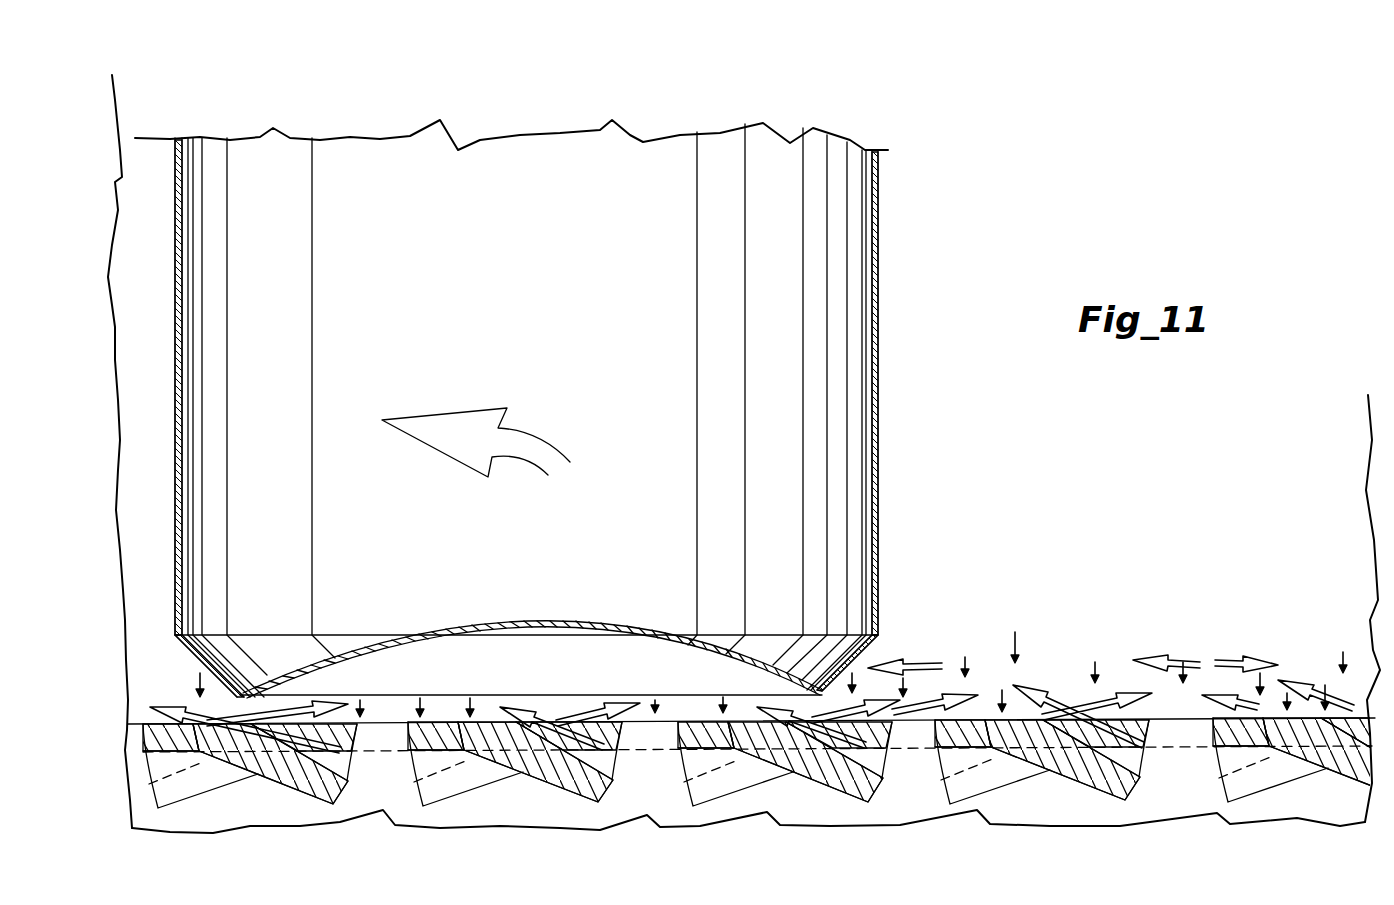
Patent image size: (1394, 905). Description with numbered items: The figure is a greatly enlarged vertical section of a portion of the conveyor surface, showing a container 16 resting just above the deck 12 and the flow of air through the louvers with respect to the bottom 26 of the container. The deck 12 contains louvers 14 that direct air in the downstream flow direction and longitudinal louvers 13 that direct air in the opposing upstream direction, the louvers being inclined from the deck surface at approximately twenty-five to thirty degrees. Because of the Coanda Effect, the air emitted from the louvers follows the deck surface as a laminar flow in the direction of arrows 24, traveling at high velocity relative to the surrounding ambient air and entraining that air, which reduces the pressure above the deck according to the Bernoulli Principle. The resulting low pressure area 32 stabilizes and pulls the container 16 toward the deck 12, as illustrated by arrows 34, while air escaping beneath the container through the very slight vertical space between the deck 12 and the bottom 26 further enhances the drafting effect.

The deck 12 is at (982, 720).
The longitudinal louvers 13 is at (200, 783).
The louvers 14 is at (347, 783).
The container 16 is at (862, 282).
The arrows 24 is at (175, 700).
The bottom 26 is at (600, 597).
The low pressure area 32 is at (643, 700).
The arrows 34 is at (355, 697).